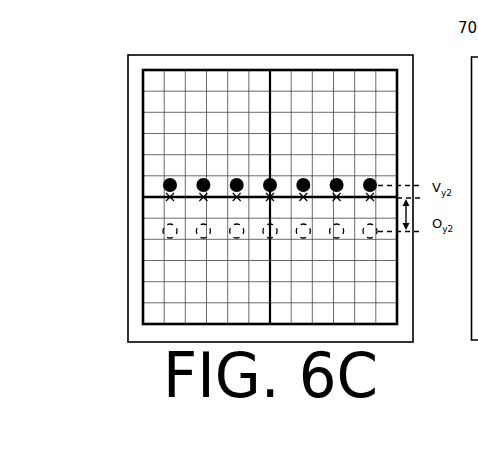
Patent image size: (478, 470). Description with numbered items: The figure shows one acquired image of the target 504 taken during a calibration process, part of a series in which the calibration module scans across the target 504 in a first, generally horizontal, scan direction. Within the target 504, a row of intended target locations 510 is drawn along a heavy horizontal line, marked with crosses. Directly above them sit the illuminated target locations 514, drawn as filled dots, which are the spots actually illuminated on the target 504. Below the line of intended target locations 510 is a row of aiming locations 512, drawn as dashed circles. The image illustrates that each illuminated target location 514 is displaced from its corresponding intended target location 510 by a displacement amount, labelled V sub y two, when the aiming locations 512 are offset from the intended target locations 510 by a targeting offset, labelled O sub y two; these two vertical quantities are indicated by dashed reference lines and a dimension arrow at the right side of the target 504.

The target 504 is at (143, 72).
The intended target location 510 is at (165, 193).
The aiming location 512 is at (194, 238).
The illuminated target location 514 is at (371, 181).